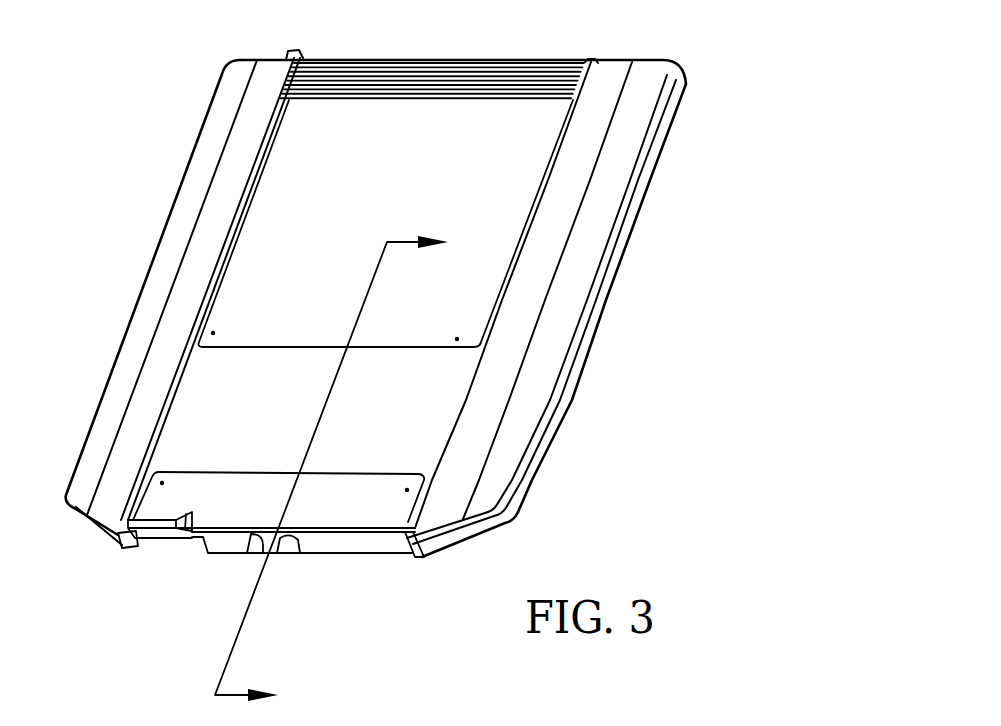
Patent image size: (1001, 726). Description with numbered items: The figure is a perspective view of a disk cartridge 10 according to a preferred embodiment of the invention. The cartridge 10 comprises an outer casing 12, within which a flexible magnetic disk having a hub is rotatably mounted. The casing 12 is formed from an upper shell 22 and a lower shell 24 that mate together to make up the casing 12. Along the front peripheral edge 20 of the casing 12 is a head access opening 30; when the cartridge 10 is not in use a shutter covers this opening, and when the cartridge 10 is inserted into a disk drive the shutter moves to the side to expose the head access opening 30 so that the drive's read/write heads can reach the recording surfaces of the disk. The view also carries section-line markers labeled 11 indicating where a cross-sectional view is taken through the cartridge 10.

The disk cartridge 10 is at (108, 99).
The section line 11- 11 is at (344, 470).
The outer casing 12 is at (513, 60).
The front peripheral edge 20 is at (357, 553).
The upper shell 22 is at (480, 527).
The lower shell 24 is at (603, 297).
The head access opening 30 is at (286, 540).